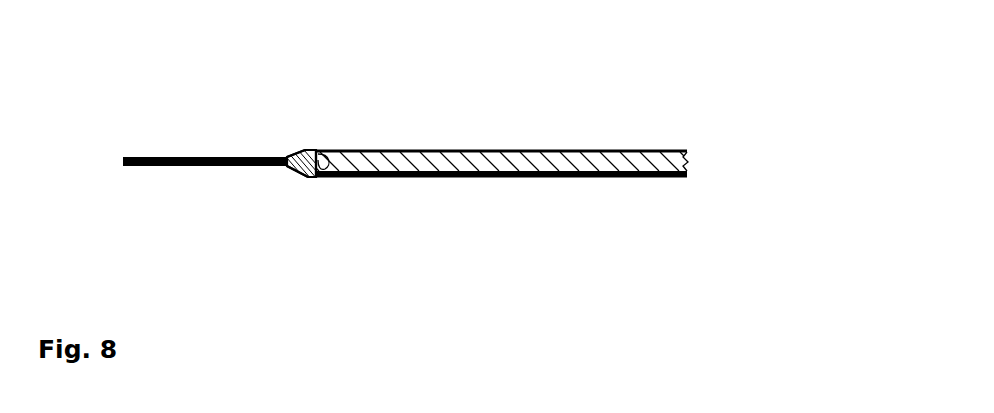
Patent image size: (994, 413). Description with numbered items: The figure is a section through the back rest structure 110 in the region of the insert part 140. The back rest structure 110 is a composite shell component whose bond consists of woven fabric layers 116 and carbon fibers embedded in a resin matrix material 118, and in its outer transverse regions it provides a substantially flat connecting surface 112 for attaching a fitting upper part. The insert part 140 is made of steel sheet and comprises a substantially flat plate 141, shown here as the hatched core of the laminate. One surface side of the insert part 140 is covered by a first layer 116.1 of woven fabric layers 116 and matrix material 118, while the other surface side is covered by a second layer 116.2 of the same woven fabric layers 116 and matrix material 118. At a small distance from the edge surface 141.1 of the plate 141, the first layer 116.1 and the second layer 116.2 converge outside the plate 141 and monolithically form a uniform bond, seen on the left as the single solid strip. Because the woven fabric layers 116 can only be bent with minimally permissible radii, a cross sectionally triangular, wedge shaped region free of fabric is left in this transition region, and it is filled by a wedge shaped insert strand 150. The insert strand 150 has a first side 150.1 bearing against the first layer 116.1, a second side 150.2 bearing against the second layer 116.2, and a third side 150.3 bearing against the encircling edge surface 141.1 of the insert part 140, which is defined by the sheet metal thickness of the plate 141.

The back rest structure 110 is at (567, 178).
The connecting surface 112 is at (374, 177).
The woven fabric layers 116 is at (438, 181).
The matrix material 118 is at (152, 157).
The first layer 116.1 is at (440, 150).
The second layer 116.2 is at (399, 178).
The insert part 140 is at (522, 160).
The plate 141 is at (483, 163).
The edge surface 141.1 is at (333, 158).
The insert strand 150 is at (307, 150).
The first side 150.1 is at (297, 152).
The second side 150.2 is at (293, 177).
The third side 150.3 is at (330, 163).